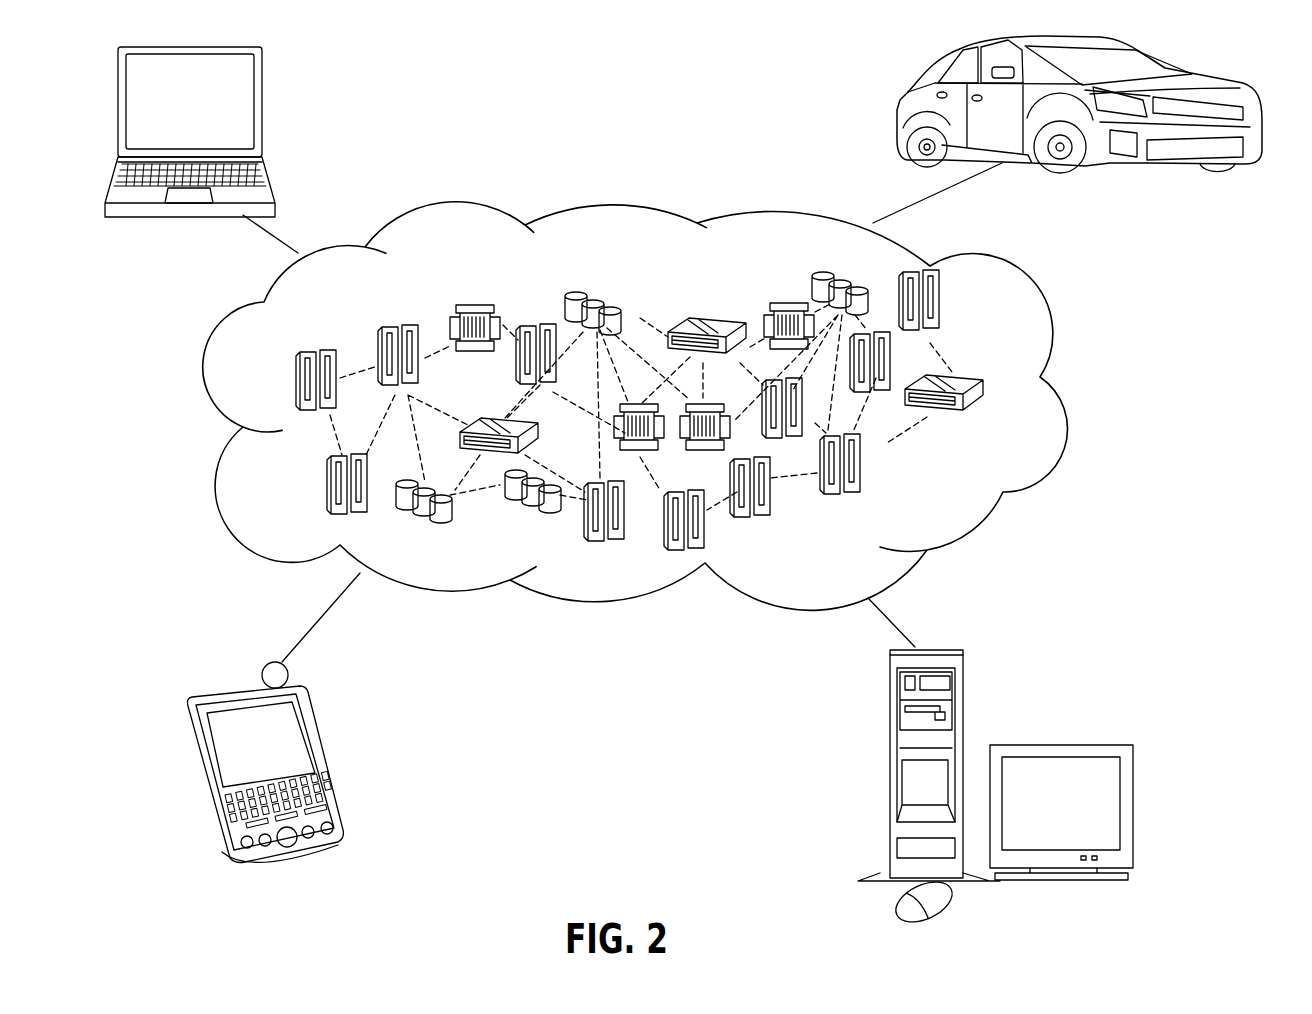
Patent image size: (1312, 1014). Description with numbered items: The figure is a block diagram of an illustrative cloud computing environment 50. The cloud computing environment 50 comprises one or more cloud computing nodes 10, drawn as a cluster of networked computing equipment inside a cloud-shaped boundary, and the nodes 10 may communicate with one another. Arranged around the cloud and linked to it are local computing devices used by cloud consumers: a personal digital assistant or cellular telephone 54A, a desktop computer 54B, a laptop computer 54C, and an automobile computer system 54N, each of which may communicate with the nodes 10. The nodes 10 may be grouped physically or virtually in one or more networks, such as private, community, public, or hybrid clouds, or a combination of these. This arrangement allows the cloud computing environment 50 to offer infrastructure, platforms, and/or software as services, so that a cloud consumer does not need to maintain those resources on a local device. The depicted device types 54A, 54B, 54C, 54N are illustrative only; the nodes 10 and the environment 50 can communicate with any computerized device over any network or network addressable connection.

The cloud computing node 10 is at (975, 505).
The cloud computing environment 50 is at (668, 406).
The personal digital assistant or cellular telephone 54A is at (315, 725).
The desktop computer 54B is at (888, 710).
The laptop computer 54C is at (262, 87).
The automobile computer system 54N is at (905, 106).